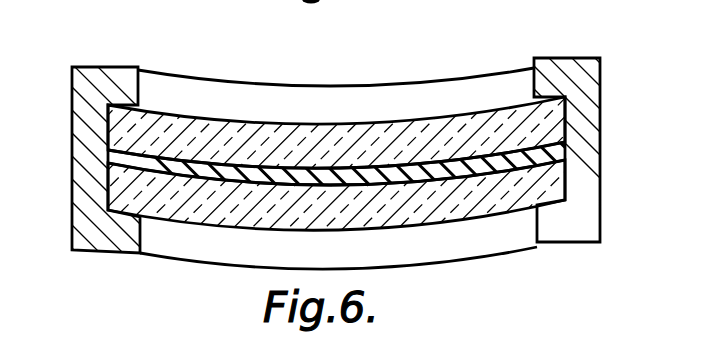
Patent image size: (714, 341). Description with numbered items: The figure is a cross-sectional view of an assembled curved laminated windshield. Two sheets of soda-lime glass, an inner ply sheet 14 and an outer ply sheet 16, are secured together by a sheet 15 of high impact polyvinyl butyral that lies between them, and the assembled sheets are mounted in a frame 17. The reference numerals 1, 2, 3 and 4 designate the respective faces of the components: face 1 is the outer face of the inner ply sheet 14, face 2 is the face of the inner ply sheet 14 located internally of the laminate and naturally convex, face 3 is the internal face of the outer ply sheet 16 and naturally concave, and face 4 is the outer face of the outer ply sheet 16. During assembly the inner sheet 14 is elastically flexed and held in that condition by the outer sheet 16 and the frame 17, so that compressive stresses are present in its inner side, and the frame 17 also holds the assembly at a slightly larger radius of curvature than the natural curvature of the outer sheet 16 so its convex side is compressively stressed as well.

The face 1 is at (475, 111).
The face 2 is at (548, 142).
The face 3 is at (552, 158).
The face 4 is at (458, 218).
The inner ply sheet 14 is at (172, 130).
The polyvinyl butyral sheet 15 is at (228, 172).
The outer ply sheet 16 is at (193, 210).
The frame 17 is at (98, 82).